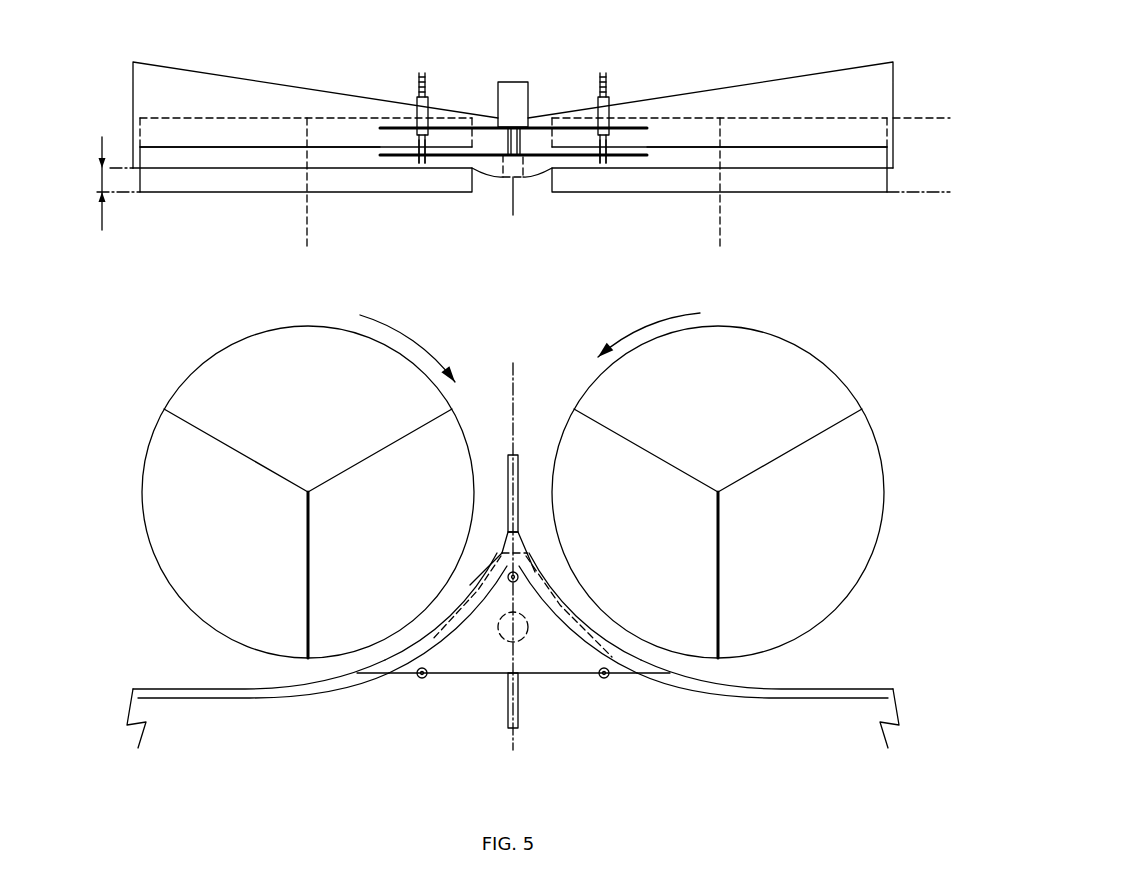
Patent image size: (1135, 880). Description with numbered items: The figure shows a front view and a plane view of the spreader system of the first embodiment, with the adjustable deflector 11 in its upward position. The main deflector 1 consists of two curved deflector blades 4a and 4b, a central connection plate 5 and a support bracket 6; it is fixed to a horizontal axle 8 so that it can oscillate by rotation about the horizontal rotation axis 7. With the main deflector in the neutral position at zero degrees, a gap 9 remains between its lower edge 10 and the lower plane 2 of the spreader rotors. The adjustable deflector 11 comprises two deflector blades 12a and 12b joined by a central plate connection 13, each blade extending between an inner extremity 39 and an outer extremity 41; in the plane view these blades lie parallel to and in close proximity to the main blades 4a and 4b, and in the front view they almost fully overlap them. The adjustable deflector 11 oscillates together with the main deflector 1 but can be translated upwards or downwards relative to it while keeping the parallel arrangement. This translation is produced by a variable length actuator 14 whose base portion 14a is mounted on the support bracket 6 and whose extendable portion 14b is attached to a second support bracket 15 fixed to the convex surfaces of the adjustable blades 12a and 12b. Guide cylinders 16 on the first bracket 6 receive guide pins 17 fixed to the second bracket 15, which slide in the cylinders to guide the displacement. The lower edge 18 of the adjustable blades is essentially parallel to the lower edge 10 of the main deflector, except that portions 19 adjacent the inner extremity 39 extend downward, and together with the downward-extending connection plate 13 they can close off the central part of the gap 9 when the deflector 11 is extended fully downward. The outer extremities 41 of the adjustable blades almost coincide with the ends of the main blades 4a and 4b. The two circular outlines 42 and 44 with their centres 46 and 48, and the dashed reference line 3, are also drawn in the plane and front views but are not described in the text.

The main deflector 1 is at (358, 80).
The lower plane of the spreader rotors 2 is at (945, 197).
The upper plane 3 is at (917, 117).
The curved deflector blade 4a is at (213, 102).
The curved deflector blade 4b is at (852, 102).
The central connection plate 5 is at (508, 540).
The support bracket 6 is at (545, 127).
The horizontal rotation axis 7 is at (516, 398).
The horizontal axle 8 is at (511, 455).
The gap 9 is at (98, 183).
The lower edge of the main deflector 10 is at (893, 168).
The adjustable deflector 11 is at (192, 182).
The adjustable deflector blade 12a is at (327, 158).
The adjustable deflector blade 12b is at (710, 158).
The central plate connection 13 is at (515, 552).
The variable length actuator 14 is at (537, 72).
The base portion of the actuator 14a is at (522, 105).
The extendable portion of the actuator 14b is at (509, 137).
The support bracket 15 is at (567, 157).
The guide cylinders 16 is at (421, 114).
The guide pins 17 is at (421, 152).
The lower edge of the adjustable deflector blades 18 is at (150, 188).
The downward-extending portions 19 is at (488, 188).
The inner extremity 39 is at (500, 553).
The outer extremity 41 is at (514, 732).
The left drum 42 is at (242, 183).
The right drum 44 is at (787, 180).
The left drum axis 46 is at (307, 220).
The right drum axis 48 is at (722, 218).